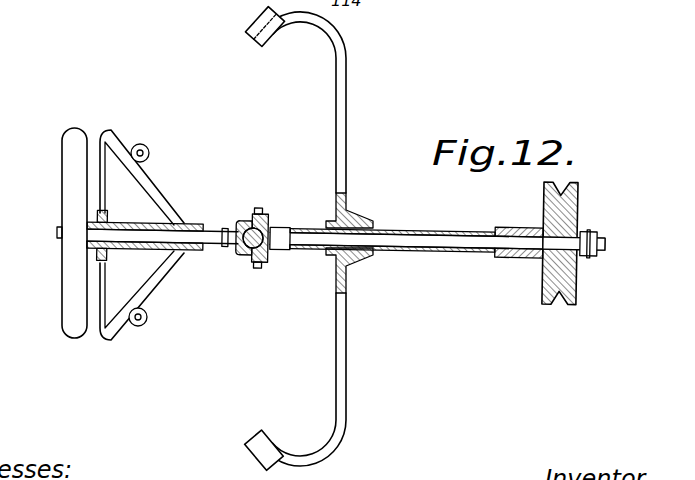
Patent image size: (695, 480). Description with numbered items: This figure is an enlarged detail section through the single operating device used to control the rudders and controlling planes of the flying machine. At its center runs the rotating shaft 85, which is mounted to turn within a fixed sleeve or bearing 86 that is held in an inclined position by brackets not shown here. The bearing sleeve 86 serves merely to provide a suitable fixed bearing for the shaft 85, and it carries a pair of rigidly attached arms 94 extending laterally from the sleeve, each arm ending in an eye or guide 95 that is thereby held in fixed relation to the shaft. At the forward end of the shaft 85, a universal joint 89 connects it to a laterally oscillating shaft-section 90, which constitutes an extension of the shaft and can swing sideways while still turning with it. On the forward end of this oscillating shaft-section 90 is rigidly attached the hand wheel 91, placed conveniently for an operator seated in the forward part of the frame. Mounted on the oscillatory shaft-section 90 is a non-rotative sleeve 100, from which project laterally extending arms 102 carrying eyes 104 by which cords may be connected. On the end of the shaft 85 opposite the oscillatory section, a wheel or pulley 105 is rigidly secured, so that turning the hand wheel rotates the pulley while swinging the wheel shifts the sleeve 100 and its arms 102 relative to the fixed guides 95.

The rotating shaft 85 is at (400, 240).
The fixed sleeve or bearing 86 is at (455, 240).
The universal joint 89 is at (265, 220).
The laterally oscillating shaft-section 90 is at (193, 238).
The hand wheel 91 is at (70, 253).
The laterally extending arms 94 is at (347, 140).
The eyes or guides 95 is at (263, 44).
The non-rotative sleeve 100 is at (188, 222).
The laterally extending arms of sleeve 102 is at (162, 183).
The eyes 104 is at (149, 147).
The wheel or pulley 105 is at (578, 193).